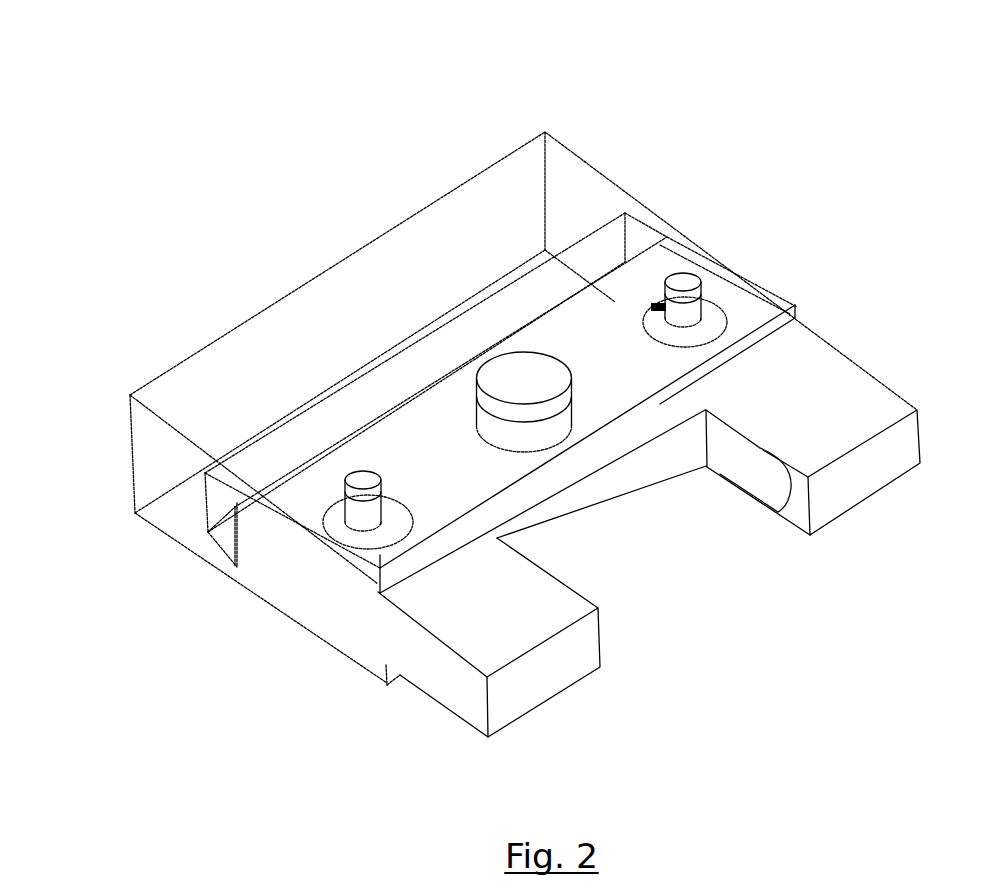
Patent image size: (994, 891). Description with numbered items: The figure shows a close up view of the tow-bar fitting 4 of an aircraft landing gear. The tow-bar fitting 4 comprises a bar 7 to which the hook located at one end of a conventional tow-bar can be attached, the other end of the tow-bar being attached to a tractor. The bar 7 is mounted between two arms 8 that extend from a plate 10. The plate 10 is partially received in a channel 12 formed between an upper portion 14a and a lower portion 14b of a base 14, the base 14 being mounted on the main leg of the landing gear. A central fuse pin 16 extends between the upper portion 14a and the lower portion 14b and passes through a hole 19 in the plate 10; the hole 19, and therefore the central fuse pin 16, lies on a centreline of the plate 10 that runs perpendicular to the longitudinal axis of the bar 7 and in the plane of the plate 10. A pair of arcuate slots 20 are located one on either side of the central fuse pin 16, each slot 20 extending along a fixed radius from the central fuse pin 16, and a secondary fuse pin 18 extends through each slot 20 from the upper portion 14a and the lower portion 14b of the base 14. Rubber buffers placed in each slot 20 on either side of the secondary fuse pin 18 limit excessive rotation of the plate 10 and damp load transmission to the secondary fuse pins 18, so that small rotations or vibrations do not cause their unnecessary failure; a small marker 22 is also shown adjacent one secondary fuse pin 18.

The tow-bar fitting 4 is at (340, 148).
The bar 7 is at (703, 497).
The arms 8 is at (780, 420).
The plate 10 is at (758, 380).
The channel 12 is at (225, 507).
The base 14 is at (153, 515).
The upper portion 14a is at (285, 512).
The lower portion 14b is at (367, 657).
The central fuse pin 16 is at (508, 383).
The secondary fuse pin 18 is at (680, 293).
The hole 19 is at (560, 440).
The arcuate slots 20 is at (703, 333).
The marker 22 is at (650, 308).